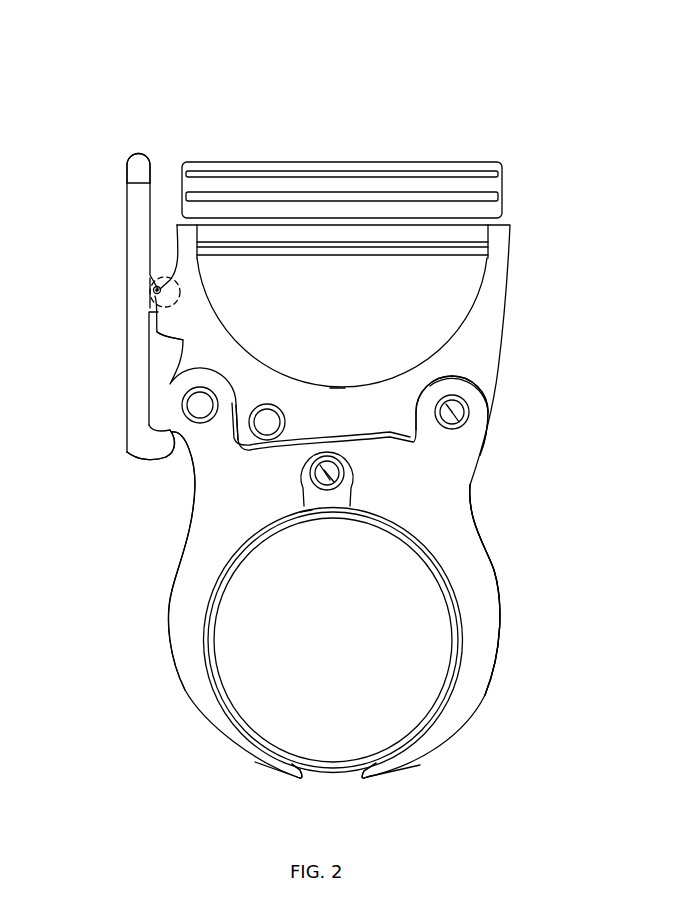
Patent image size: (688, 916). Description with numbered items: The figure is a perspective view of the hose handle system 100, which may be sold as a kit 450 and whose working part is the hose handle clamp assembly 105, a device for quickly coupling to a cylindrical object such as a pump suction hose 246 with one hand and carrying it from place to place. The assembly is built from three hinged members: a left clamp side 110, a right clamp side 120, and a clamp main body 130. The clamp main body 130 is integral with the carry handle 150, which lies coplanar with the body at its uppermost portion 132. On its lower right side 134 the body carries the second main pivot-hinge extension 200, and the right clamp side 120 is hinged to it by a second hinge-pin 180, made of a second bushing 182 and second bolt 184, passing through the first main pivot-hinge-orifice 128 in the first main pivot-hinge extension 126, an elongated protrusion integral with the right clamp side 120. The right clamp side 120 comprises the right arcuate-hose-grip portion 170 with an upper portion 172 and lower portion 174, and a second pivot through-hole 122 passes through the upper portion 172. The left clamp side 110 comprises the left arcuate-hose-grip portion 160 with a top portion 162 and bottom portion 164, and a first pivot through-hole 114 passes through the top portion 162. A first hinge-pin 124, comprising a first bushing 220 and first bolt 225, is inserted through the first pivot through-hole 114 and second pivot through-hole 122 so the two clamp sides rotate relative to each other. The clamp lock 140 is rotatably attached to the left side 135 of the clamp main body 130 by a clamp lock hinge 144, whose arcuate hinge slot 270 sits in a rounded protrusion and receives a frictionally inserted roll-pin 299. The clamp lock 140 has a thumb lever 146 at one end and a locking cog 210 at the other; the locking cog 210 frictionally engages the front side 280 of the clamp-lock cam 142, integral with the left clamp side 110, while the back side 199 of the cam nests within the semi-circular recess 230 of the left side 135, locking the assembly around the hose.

The hose handle system 100 is at (504, 64).
The hose handle clamp assembly 105 is at (520, 100).
The kit 450 is at (538, 134).
The carry handle 150 is at (252, 160).
The uppermost portion 132 is at (182, 239).
The clamp main body 130 is at (344, 419).
The first main pivot-hinge extension 126 is at (232, 452).
The back side 199 is at (258, 386).
The second bolt 184 is at (470, 416).
The second main pivot-hinge extension 200 is at (458, 459).
The second bushing 182 is at (446, 401).
The second hinge-pin 180 is at (456, 415).
The lower right side 134 is at (491, 391).
The first main pivot-hinge-orifice 128 is at (490, 411).
The semi-circular recess 230 is at (218, 390).
The front side 280 is at (358, 392).
The first bushing 220 is at (342, 470).
The first bolt 225 is at (308, 496).
The first hinge-pin 124 is at (320, 470).
The second pivot through-hole 122 is at (348, 487).
The pump suction hose 246 is at (213, 640).
The first pivot through-hole 114 is at (307, 518).
The left clamp side 110 is at (172, 618).
The left arcuate-hose-grip portion 160 is at (205, 586).
The top portion 162 is at (190, 489).
The bottom portion 164 is at (248, 762).
The right clamp side 120 is at (497, 622).
The right arcuate-hose-grip portion 170 is at (462, 578).
The upper portion 172 is at (478, 500).
The lower portion 174 is at (400, 765).
The clamp lock 140 is at (135, 365).
The thumb lever 146 is at (137, 170).
The roll-pin 299 is at (153, 287).
The arcuate hinge slot 270 is at (181, 292).
The clamp lock hinge 144 is at (86, 279).
The left side 135 is at (180, 337).
The clamp-lock cam 142 is at (167, 413).
The locking cog 210 is at (126, 440).